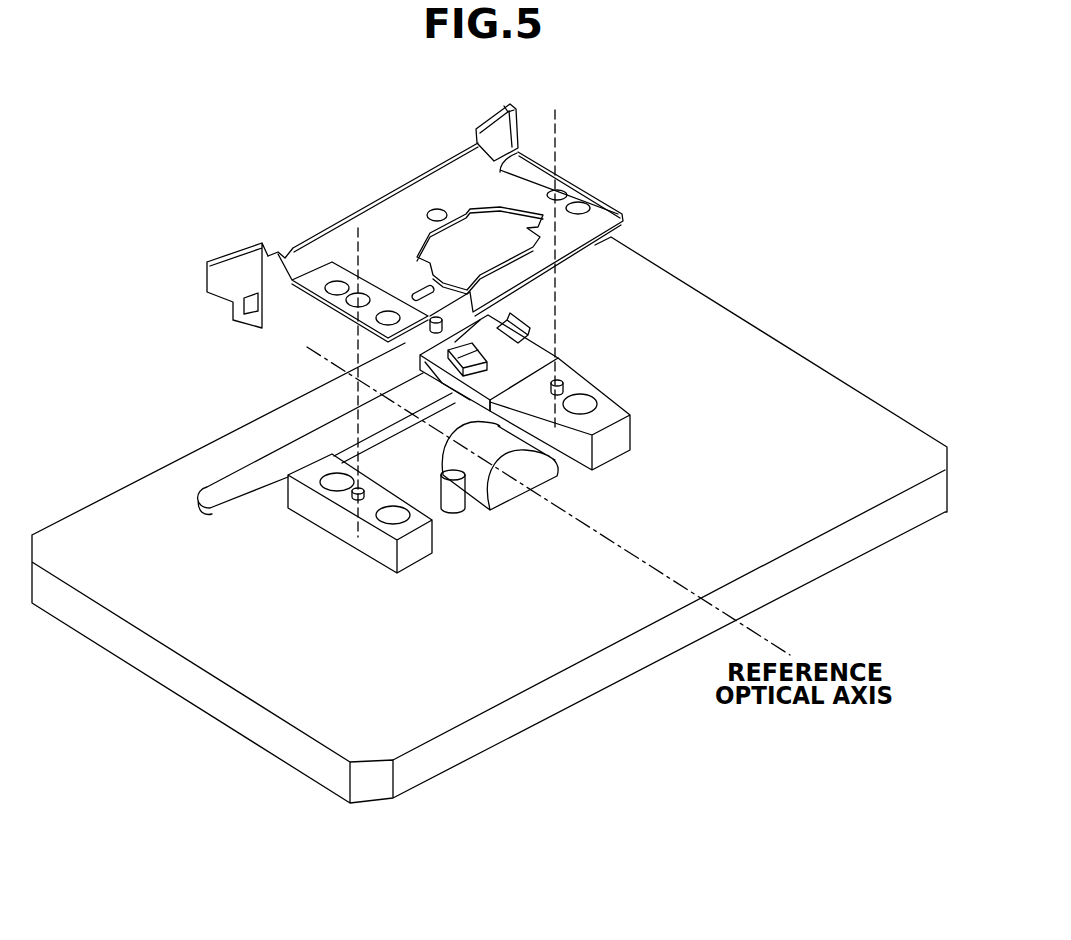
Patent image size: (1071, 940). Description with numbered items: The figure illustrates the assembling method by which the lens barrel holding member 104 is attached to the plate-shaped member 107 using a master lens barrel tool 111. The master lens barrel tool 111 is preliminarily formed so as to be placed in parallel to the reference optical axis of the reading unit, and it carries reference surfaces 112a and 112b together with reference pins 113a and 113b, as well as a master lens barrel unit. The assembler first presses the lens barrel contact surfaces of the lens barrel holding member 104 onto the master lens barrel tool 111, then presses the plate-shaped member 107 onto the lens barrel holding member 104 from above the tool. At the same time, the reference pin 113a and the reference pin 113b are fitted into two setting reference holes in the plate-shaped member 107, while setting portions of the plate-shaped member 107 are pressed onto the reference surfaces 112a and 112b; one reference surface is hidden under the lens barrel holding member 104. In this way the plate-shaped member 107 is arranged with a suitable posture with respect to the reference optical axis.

The plate-shaped member 107 is at (377, 230).
The lens barrel holding member 104 is at (517, 352).
The master lens barrel tool 111 is at (505, 493).
The reference surfaces 112a is at (333, 480).
The reference surfaces 112b is at (582, 403).
The reference pin 113a is at (292, 506).
The reference pin 113b is at (558, 382).